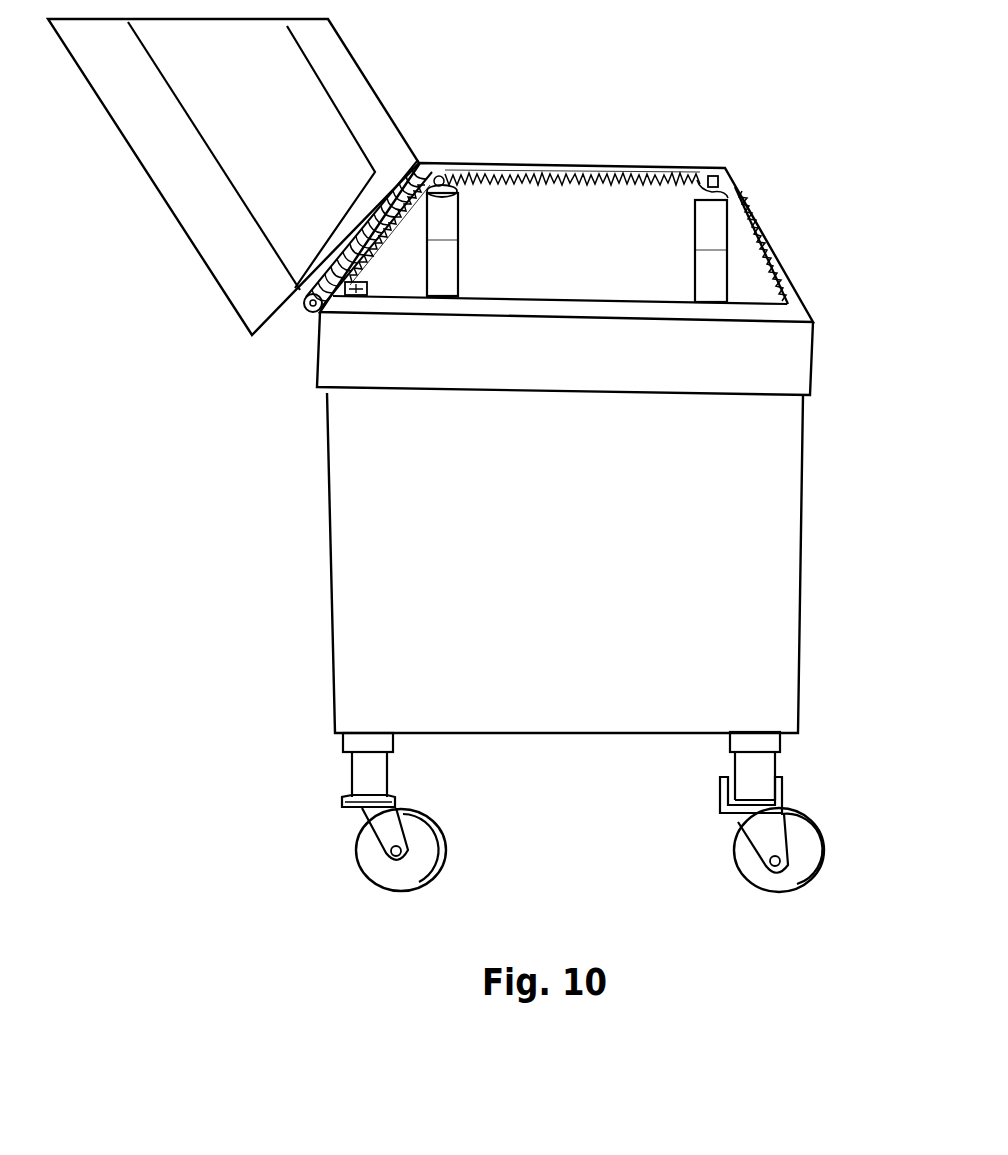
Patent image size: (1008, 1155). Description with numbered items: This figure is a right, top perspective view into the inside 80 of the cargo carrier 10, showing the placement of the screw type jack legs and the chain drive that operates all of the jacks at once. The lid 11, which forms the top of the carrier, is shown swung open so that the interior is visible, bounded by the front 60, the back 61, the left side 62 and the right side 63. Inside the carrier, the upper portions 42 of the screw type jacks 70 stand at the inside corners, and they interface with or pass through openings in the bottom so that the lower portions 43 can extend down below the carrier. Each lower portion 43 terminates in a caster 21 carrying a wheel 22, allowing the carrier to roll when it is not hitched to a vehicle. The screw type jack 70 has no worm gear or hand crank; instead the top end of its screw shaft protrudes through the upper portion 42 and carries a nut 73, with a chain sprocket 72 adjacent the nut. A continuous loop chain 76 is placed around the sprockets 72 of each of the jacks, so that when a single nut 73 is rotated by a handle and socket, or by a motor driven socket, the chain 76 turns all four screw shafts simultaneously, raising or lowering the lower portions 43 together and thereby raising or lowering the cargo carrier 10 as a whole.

The cargo carrier 10 is at (847, 215).
The lid 11 is at (285, 119).
The caster 21 is at (340, 812).
The wheel 22 is at (446, 832).
The upper portion 42 is at (460, 247).
The lower portion 43 is at (387, 778).
The front 60 is at (396, 278).
The back 61 is at (732, 292).
The left side 62 is at (577, 268).
The right side 63 is at (580, 525).
The screw type jack 70 is at (475, 202).
The chain sprocket 72 is at (440, 183).
The nut 73 is at (712, 176).
The continuous loop chain 76 is at (583, 178).
The inside 80 is at (538, 210).